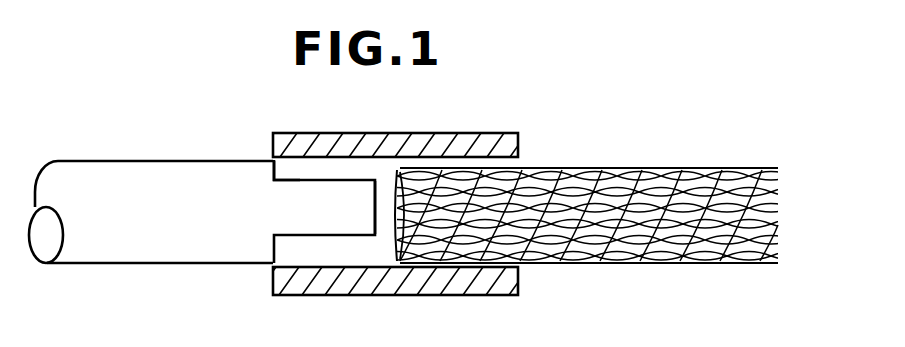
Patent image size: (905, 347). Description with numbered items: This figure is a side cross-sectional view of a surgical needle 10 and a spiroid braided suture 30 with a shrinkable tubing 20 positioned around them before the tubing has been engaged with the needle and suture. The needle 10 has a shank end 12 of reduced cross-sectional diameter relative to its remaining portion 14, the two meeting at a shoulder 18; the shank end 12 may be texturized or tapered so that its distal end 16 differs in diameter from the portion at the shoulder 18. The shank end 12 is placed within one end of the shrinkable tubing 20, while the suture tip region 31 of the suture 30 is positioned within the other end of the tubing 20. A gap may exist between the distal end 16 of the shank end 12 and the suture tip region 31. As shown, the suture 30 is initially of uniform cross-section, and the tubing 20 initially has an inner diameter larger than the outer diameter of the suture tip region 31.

The surgical needle 10 is at (403, 209).
The shank end 12 is at (327, 222).
The remaining portion 14 is at (132, 264).
The distal end 16 is at (375, 183).
The shoulder 18 is at (280, 168).
The shrinkable tubing 20 is at (425, 138).
The spiroid braided suture 30 is at (587, 148).
The suture tip region 31 is at (530, 177).